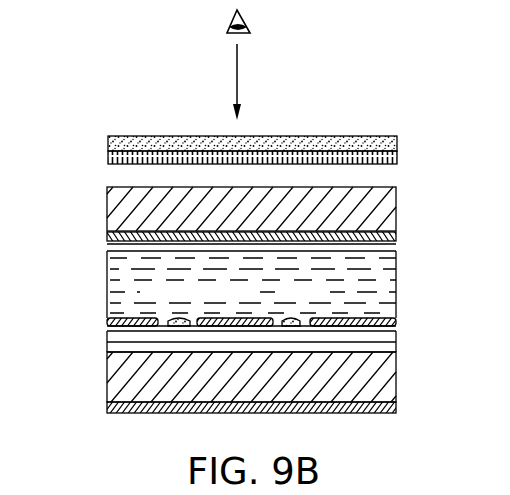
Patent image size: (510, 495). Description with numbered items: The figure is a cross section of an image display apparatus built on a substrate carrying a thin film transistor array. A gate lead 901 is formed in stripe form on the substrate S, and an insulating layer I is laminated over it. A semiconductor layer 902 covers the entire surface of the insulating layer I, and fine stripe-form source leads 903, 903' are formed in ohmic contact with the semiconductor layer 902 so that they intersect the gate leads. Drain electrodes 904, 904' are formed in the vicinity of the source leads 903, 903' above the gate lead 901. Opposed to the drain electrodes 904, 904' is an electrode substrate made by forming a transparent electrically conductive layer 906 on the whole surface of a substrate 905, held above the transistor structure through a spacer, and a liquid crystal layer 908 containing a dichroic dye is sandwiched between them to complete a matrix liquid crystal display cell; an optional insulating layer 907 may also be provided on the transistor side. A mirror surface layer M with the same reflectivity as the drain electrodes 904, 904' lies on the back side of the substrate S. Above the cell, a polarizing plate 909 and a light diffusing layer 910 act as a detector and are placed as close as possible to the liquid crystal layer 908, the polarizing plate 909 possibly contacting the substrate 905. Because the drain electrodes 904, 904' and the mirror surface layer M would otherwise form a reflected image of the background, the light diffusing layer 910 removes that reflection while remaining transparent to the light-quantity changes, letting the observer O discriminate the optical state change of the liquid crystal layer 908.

The observer O is at (226, 65).
The light diffusing layer 910 is at (397, 145).
The polarizing plate 909 is at (397, 159).
The substrate 905 is at (107, 190).
The transparent electrically conductive layer 906 is at (107, 237).
The insulating layer 907 is at (107, 248).
The liquid crystal layer 908 is at (107, 292).
The drain electrode 904 is at (190, 298).
The drain electrode 904' is at (388, 304).
The source lead 903 is at (168, 302).
The source lead 903' is at (303, 302).
The semiconductor layer 902 is at (107, 333).
The gate lead 901 is at (396, 352).
The insulating layer I is at (107, 345).
The substrate S is at (107, 390).
The mirror surface layer M is at (396, 408).